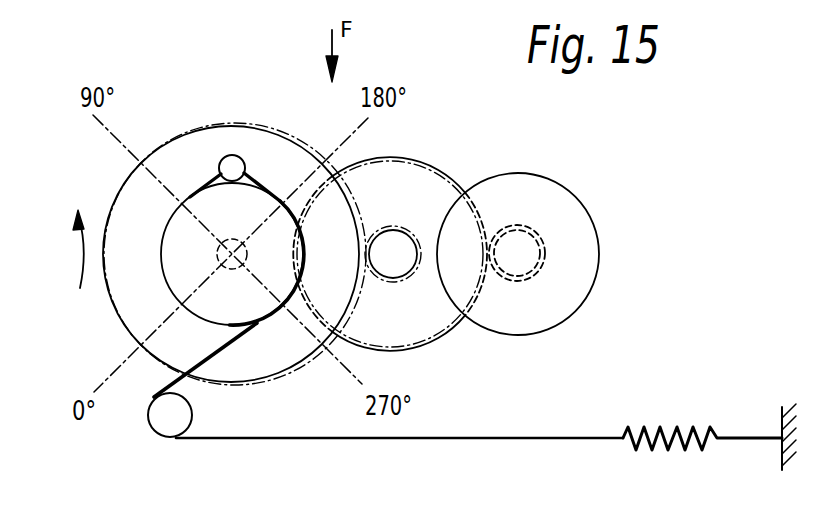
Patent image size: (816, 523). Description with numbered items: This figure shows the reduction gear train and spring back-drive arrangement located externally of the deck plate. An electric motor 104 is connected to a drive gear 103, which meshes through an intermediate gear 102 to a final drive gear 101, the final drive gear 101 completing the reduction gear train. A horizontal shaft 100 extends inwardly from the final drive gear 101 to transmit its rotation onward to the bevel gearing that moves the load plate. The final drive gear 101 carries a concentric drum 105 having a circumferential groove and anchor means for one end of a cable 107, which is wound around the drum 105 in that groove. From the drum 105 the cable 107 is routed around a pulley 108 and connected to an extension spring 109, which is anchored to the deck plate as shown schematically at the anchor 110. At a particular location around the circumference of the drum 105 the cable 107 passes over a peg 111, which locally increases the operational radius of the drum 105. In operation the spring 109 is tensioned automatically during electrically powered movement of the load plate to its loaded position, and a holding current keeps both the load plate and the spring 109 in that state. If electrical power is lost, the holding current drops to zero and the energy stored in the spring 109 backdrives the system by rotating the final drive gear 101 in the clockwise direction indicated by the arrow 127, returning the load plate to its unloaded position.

The horizontal shaft 100 is at (216, 257).
The final drive gear 101 is at (181, 133).
The intermediate gear 102 is at (427, 186).
The drive gear 103 is at (527, 260).
The electric motor 104 is at (557, 213).
The concentric drum 105 is at (180, 275).
The cable 107 is at (485, 436).
The pulley 108 is at (167, 420).
The extension spring 109 is at (677, 423).
The anchor 110 is at (780, 452).
The peg 111 is at (237, 166).
The arrow 127 is at (76, 250).